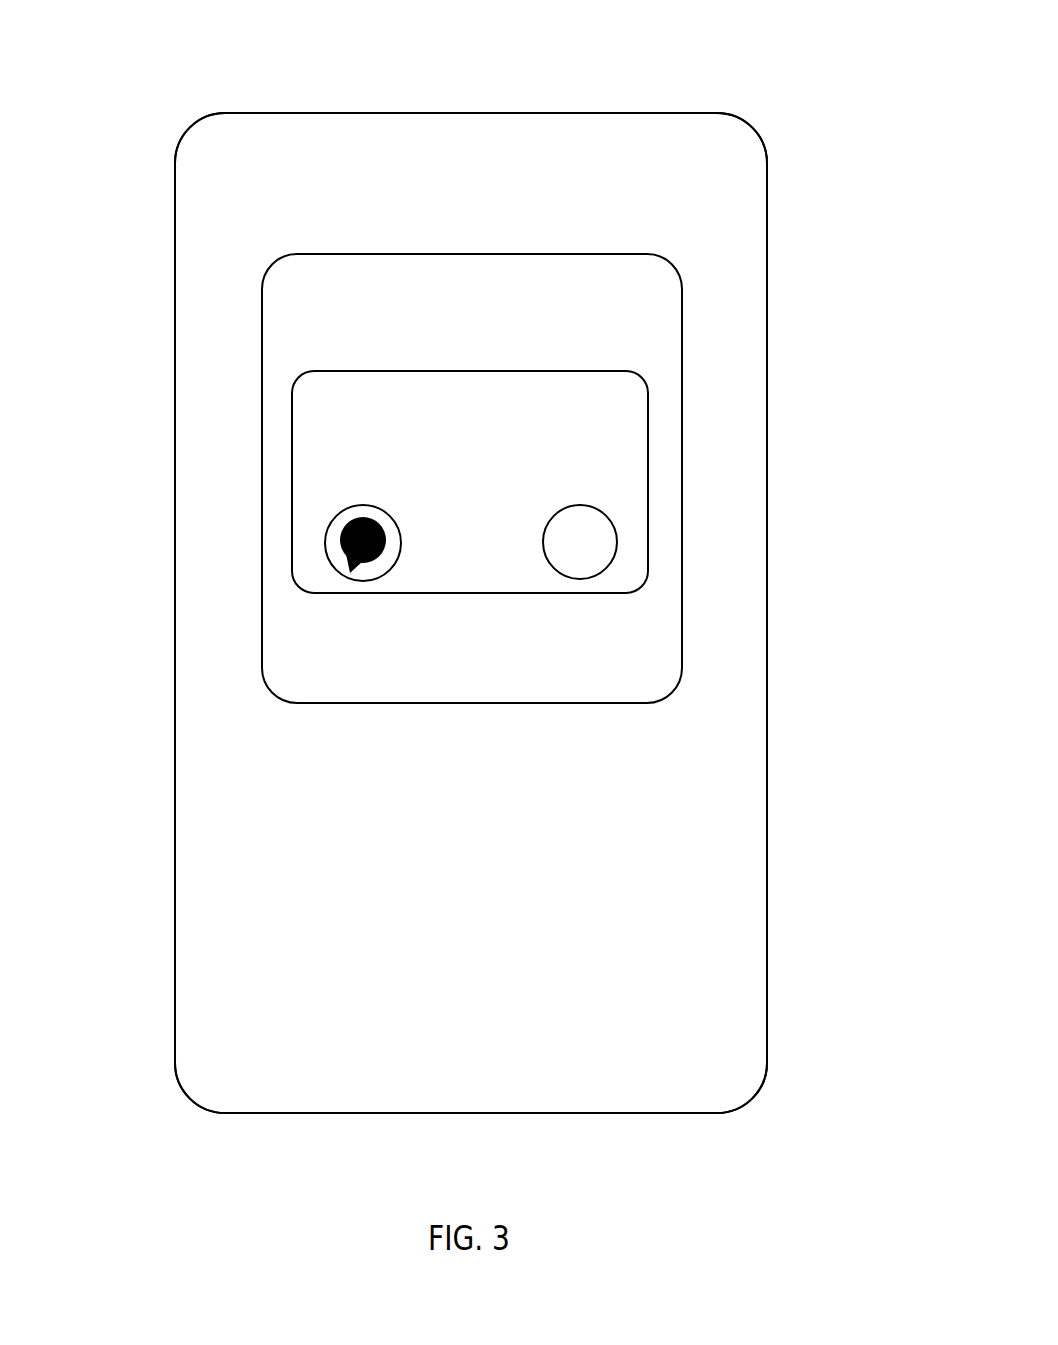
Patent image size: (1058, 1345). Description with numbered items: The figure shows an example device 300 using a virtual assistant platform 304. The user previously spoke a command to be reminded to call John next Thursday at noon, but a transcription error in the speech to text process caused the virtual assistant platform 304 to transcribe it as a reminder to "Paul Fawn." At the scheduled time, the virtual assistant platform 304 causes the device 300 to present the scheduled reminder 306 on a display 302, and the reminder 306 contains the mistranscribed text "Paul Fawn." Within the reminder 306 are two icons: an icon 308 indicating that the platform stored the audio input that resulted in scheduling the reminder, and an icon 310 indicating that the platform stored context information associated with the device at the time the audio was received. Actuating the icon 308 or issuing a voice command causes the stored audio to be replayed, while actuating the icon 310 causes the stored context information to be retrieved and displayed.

The device 300 is at (845, 42).
The display 302 is at (767, 412).
The virtual assistant platform 304 is at (682, 662).
The reminder 306 is at (292, 410).
The icon 308 is at (324, 542).
The icon 310 is at (617, 542).